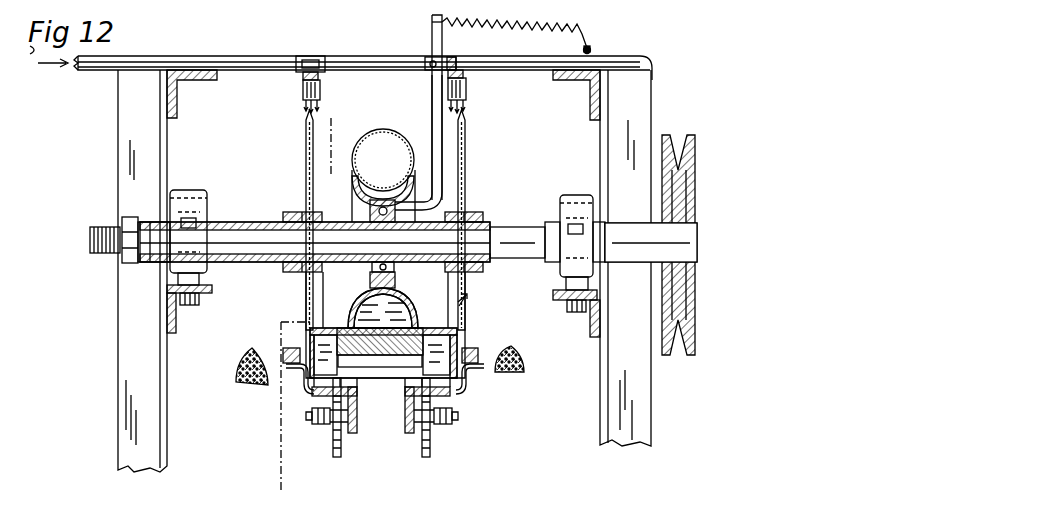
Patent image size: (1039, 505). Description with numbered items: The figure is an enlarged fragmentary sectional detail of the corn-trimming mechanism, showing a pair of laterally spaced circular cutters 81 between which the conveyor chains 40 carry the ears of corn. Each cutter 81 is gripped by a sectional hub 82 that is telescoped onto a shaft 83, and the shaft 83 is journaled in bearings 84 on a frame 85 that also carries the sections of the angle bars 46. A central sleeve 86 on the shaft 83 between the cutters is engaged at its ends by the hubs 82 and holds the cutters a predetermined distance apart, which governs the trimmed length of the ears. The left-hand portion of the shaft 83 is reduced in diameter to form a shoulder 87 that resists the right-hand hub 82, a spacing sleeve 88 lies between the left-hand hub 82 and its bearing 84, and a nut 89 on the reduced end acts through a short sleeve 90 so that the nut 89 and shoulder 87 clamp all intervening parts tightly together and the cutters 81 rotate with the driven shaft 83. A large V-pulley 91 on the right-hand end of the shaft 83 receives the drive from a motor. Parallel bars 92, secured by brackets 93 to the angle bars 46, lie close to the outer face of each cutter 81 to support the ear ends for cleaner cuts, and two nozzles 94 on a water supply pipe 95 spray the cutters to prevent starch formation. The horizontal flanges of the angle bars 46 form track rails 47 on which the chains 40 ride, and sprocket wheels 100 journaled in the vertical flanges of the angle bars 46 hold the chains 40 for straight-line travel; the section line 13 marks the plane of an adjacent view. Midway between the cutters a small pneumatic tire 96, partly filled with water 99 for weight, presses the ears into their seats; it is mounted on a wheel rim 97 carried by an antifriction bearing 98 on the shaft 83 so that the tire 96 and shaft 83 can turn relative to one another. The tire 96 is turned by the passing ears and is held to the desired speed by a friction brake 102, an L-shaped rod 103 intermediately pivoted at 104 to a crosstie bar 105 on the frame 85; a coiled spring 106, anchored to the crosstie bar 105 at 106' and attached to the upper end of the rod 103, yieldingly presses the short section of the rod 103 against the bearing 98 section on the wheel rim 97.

The section line 13 is at (318, 135).
The endless sprocket chains 40 is at (418, 381).
The angle bars 46 is at (408, 422).
The track rails 47 is at (312, 393).
The circular cutters 81 is at (306, 134).
The sectional hub 82 is at (294, 271).
The shaft 83 is at (250, 233).
The bearings 84 is at (192, 200).
The frame 85 is at (157, 352).
The central sleeve 86 is at (448, 214).
The shoulder 87 is at (494, 243).
The spacing sleeve 88 is at (246, 262).
The nut 89 is at (126, 265).
The short sleeve 90 is at (152, 220).
The V-pulley 91 is at (680, 176).
The parallel bars 92 is at (282, 352).
The brackets 93 is at (308, 379).
The nozzles 94 is at (302, 91).
The water supply pipe 95 is at (292, 62).
The pneumatic tire 96 is at (388, 129).
The wheel rim 97 is at (360, 190).
The antifriction bearing 98 is at (406, 286).
The water 99 is at (414, 318).
The sprocket wheels 100 is at (422, 452).
The friction brake 102 is at (422, 94).
The L-shaped rod 103 is at (437, 162).
The pivot 104 is at (425, 63).
The crosstie bar 105 is at (650, 82).
The coiled spring 106 is at (541, 36).
The spring anchorage 106' is at (565, 75).